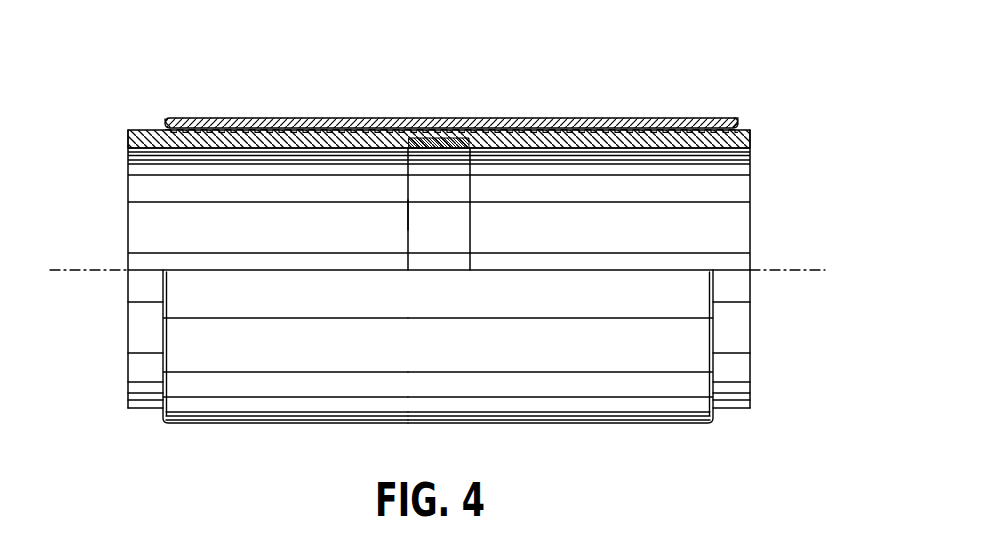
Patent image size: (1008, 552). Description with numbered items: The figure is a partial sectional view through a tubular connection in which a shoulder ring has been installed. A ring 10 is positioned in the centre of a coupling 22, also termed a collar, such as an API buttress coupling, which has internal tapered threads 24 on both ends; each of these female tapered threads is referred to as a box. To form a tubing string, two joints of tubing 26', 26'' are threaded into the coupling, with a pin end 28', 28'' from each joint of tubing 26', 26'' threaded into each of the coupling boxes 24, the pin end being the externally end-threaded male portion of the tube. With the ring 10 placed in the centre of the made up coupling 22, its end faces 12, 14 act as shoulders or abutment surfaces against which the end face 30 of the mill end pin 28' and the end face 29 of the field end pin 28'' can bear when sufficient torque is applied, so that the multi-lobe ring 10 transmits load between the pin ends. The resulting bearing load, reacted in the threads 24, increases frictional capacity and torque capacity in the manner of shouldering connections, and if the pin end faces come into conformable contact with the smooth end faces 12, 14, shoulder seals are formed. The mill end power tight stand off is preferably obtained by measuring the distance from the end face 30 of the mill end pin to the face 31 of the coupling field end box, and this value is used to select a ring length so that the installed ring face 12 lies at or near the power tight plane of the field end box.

The ring 10 is at (450, 142).
The end face of the ring 12 is at (407, 253).
The end face of the ring 14 is at (471, 253).
The coupling 22 is at (333, 117).
The internal tapered threads 24 is at (182, 142).
The joint of tubing 26' is at (100, 310).
The joint of tubing 26'' is at (780, 306).
The mill end pin 28' is at (153, 94).
The field end pin 28'' is at (753, 96).
The end face of field end pin 29 is at (468, 176).
The end face of mill end pin 30 is at (408, 207).
The face of the coupling field end box 31 is at (738, 118).